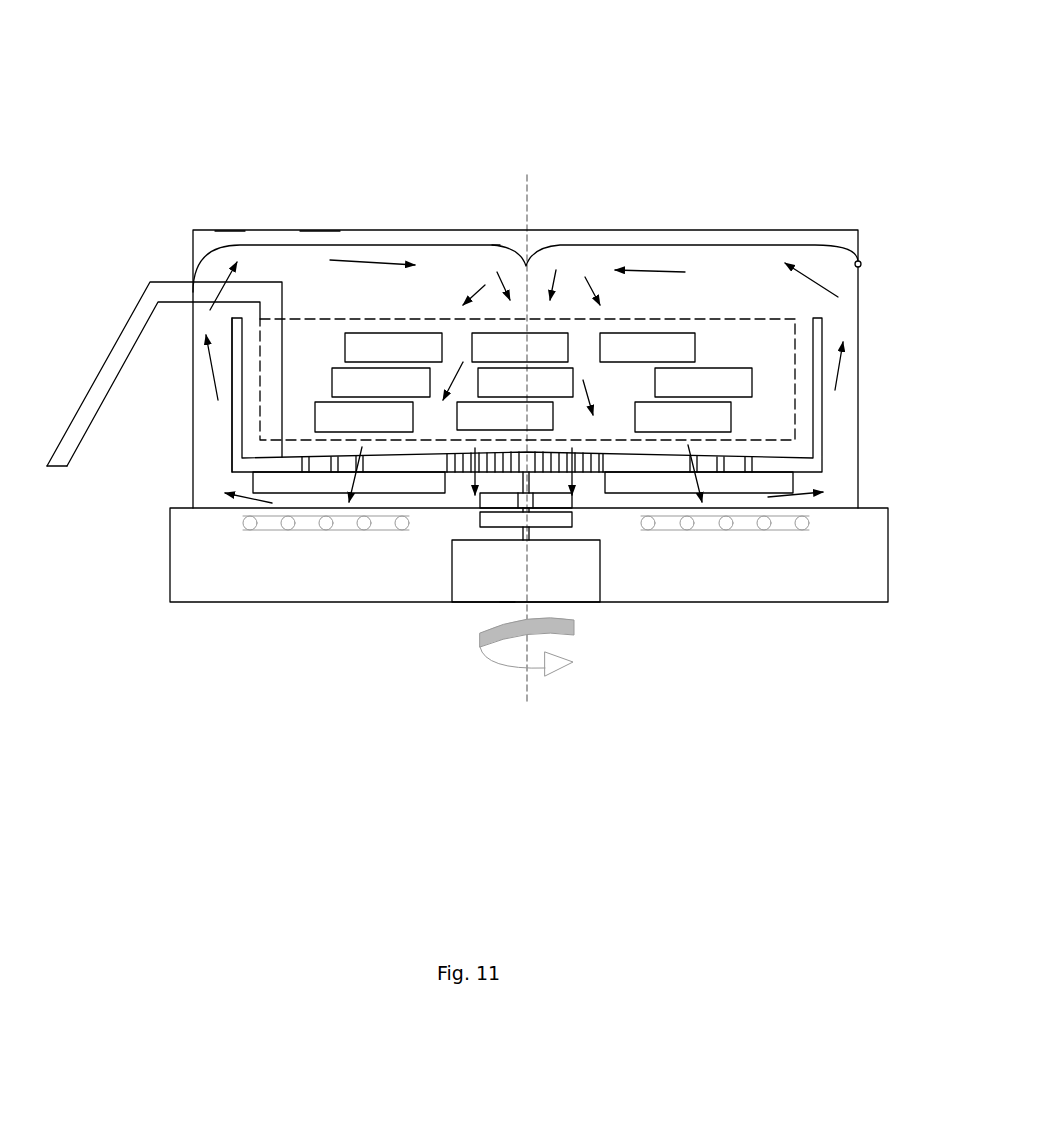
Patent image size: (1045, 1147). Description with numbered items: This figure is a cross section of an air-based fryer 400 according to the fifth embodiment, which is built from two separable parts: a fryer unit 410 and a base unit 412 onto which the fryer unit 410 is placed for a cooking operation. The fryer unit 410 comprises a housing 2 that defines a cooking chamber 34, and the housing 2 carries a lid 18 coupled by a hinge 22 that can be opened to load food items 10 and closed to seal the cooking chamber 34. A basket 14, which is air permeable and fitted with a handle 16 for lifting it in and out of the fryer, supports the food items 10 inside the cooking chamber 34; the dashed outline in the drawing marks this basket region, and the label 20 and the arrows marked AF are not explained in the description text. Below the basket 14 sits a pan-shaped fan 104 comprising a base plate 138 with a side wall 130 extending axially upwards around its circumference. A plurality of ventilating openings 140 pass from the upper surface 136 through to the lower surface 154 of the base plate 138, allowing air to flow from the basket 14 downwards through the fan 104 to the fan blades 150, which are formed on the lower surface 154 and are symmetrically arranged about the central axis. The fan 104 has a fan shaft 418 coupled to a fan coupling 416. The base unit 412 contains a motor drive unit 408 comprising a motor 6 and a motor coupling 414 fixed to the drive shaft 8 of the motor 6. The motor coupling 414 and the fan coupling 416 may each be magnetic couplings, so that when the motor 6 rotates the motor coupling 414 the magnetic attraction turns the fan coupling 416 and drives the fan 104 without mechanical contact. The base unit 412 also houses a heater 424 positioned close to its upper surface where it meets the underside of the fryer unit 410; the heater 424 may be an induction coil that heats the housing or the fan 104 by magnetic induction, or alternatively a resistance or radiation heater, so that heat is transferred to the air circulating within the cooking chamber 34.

The air-based fryer 400 is at (216, 99).
The fryer unit 410 is at (318, 229).
The lid 18 is at (215, 230).
The cover top 20 is at (492, 245).
The basket 14 is at (562, 318).
The cooking chamber 34 is at (757, 275).
The food items 10 is at (667, 353).
The hinge 22 is at (861, 262).
The housing 2 is at (858, 350).
The handle 16 is at (125, 330).
The air flow AF is at (210, 375).
The side wall 130 is at (230, 413).
The fan 104 is at (228, 472).
The base unit 412 is at (166, 590).
The upper surface 136 is at (380, 455).
The lower surface 154 is at (403, 474).
The base plate 138 is at (437, 462).
The fan coupling 416 is at (497, 498).
The drive shaft 8 is at (520, 537).
The motor drive unit 408 is at (507, 602).
The motor 6 is at (543, 573).
The motor coupling 414 is at (530, 480).
The fan shaft 418 is at (538, 518).
The fan blades 150 is at (680, 493).
The ventilating openings 140 is at (722, 455).
The heater 424 is at (782, 532).